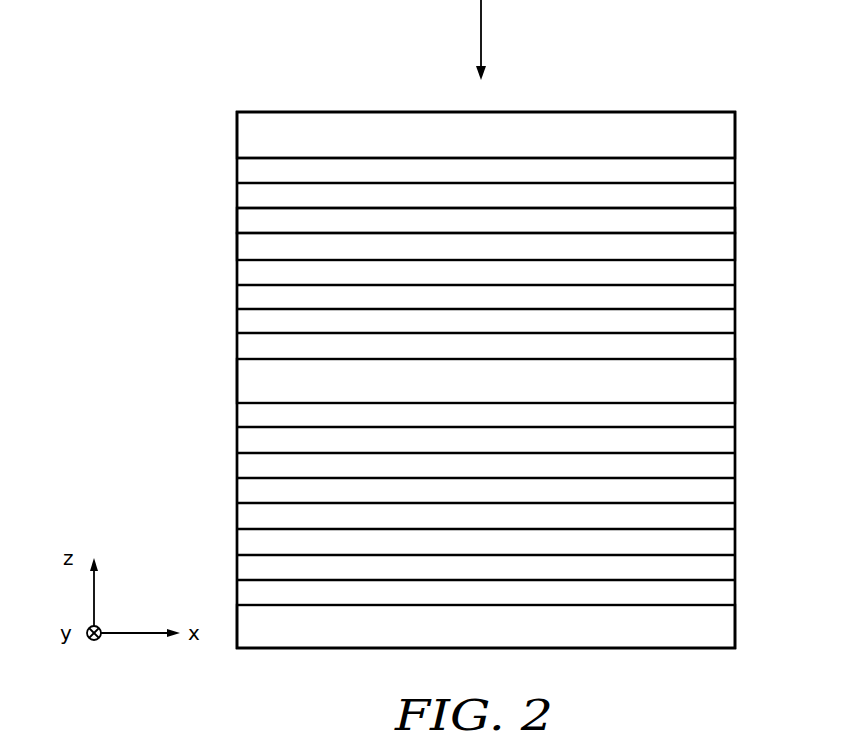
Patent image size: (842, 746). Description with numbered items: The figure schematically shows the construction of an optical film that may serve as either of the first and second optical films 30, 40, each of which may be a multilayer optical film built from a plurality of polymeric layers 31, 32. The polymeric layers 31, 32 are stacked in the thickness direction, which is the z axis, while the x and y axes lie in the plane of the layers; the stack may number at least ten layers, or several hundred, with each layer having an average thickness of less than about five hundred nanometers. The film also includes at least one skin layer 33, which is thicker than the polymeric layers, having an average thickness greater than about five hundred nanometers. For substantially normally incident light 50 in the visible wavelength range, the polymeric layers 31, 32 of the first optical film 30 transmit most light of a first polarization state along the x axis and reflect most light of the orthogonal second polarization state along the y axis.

The first optical film 30 is at (429, 347).
The second optical film 40 is at (404, 343).
The polymeric layer 31 is at (723, 222).
The polymeric layer 32 is at (723, 245).
The skin layer 33 is at (720, 128).
The substantially normally incident light 50 is at (481, 33).